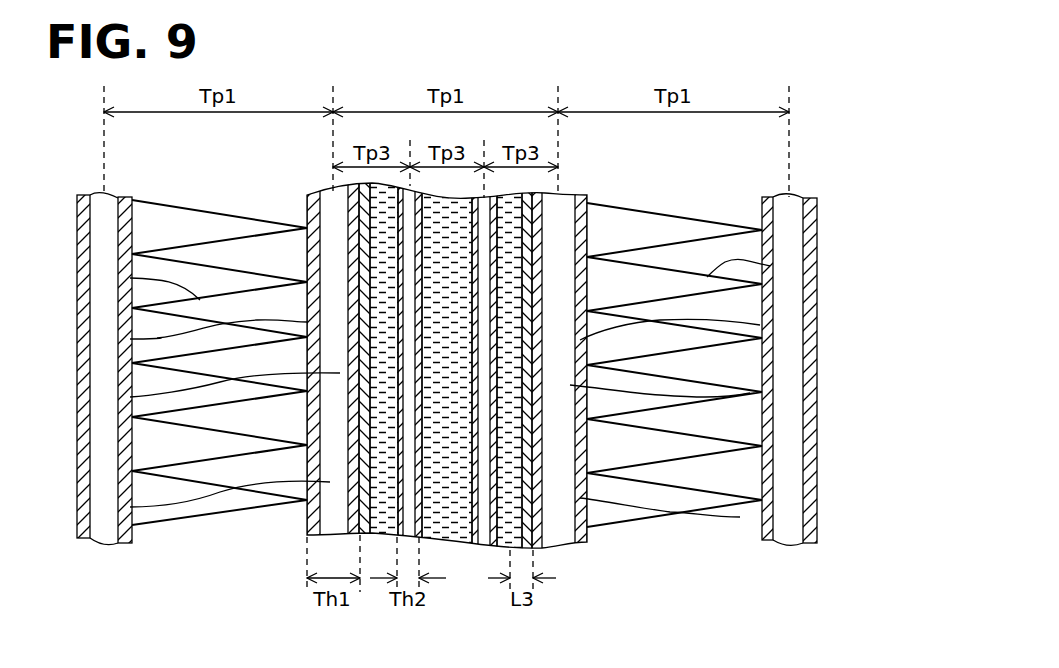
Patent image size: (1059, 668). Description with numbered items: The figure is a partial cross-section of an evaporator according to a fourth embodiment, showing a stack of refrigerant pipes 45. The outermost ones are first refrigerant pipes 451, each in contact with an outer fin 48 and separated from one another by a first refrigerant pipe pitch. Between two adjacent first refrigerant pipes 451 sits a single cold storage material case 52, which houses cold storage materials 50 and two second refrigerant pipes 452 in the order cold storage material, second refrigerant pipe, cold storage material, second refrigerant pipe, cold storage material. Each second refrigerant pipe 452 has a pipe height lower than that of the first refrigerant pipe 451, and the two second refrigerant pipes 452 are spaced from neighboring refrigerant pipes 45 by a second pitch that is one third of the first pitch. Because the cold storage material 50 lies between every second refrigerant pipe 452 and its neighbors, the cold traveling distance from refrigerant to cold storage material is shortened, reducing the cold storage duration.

The refrigerant pipe 45 is at (103, 545).
The outer fin 48 is at (130, 278).
The first refrigerant pipe 451 is at (130, 339).
The second refrigerant pipe 452 is at (130, 507).
The cold storage material 50 is at (330, 423).
The cold storage material case 52 is at (130, 397).